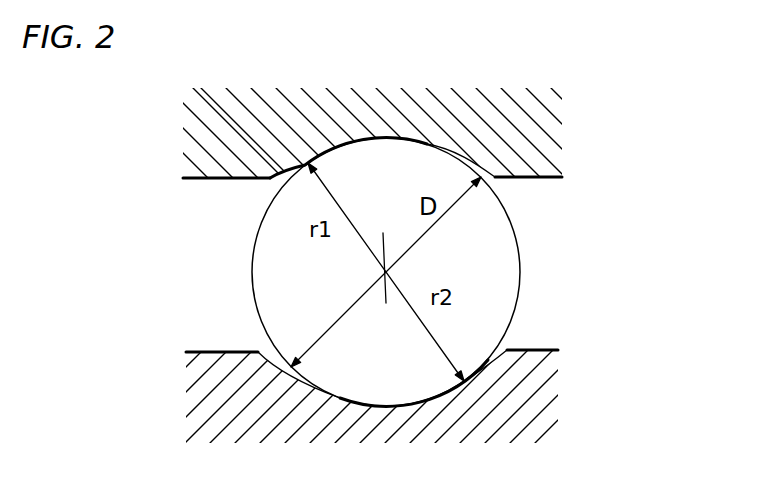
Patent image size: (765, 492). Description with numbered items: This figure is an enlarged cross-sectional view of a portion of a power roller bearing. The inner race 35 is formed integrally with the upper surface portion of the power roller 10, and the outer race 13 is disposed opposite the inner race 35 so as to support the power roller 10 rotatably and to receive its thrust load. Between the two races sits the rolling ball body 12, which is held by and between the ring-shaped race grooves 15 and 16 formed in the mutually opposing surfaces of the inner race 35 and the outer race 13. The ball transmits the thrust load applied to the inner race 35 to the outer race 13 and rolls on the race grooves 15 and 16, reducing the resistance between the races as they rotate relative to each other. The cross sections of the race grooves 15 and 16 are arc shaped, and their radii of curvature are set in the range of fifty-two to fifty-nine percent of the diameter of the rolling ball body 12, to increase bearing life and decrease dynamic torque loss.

The power roller 10 is at (488, 397).
The rolling ball body 12 is at (498, 272).
The outer race 13 is at (487, 131).
The race groove 15 is at (288, 175).
The race groove 16 is at (262, 358).
The inner race 35 is at (545, 350).